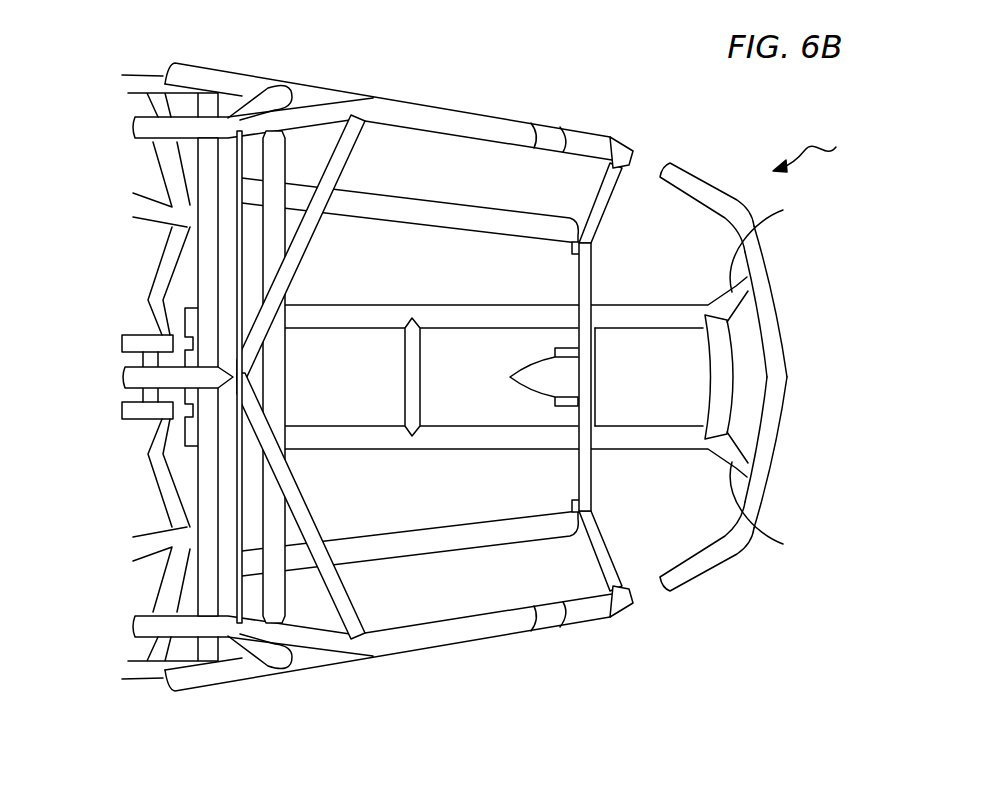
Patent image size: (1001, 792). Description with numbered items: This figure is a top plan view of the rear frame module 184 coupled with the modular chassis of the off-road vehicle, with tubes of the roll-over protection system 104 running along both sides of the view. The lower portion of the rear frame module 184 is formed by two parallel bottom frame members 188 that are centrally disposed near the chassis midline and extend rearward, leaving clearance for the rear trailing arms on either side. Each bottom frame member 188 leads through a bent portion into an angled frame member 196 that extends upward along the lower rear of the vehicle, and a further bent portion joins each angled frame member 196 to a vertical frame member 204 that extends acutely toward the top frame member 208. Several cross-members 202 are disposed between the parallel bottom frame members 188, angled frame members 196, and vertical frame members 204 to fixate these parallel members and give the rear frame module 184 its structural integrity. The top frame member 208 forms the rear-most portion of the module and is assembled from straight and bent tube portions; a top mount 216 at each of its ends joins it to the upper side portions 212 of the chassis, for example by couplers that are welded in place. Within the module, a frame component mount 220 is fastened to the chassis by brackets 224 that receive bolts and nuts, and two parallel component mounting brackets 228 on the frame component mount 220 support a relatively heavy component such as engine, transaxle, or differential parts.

The roll-over protection system 104 is at (133, 131).
The rear frame module 184 is at (836, 147).
The bottom frame members 188 is at (365, 304).
The angled frame member 196 is at (683, 318).
The cross-members 202 is at (400, 368).
The vertical frame member 204 is at (783, 210).
The top frame member 208 is at (769, 288).
The upper side portions 212 is at (627, 140).
The top mount 216 is at (668, 162).
The frame component mount 220 is at (585, 290).
The brackets 224 is at (571, 248).
The component mounting brackets 228 is at (508, 378).